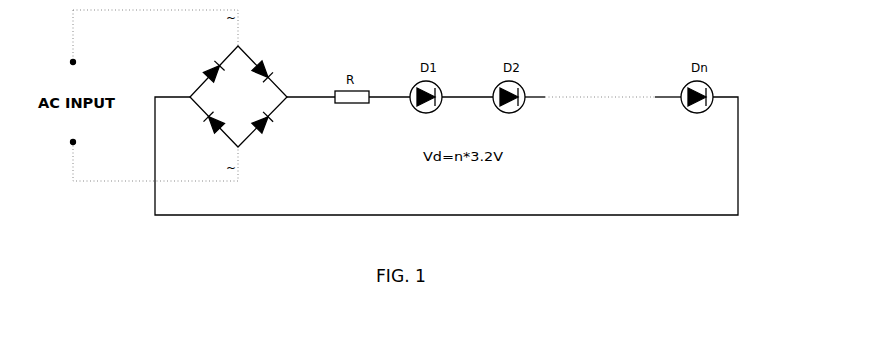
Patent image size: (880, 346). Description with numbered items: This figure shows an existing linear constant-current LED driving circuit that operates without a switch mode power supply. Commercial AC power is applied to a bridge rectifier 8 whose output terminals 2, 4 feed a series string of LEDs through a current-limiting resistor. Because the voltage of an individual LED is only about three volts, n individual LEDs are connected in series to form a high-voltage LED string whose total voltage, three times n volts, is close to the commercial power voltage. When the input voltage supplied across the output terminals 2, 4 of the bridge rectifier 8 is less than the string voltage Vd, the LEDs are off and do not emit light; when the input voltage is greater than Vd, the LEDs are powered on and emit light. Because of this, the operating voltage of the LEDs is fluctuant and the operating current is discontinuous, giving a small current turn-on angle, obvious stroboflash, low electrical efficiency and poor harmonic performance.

The positive DC output terminal of bridge rectifier 2 is at (311, 89).
The negative DC output terminal of bridge rectifier 4 is at (446, 149).
The bridge rectifier 8 is at (238, 96).